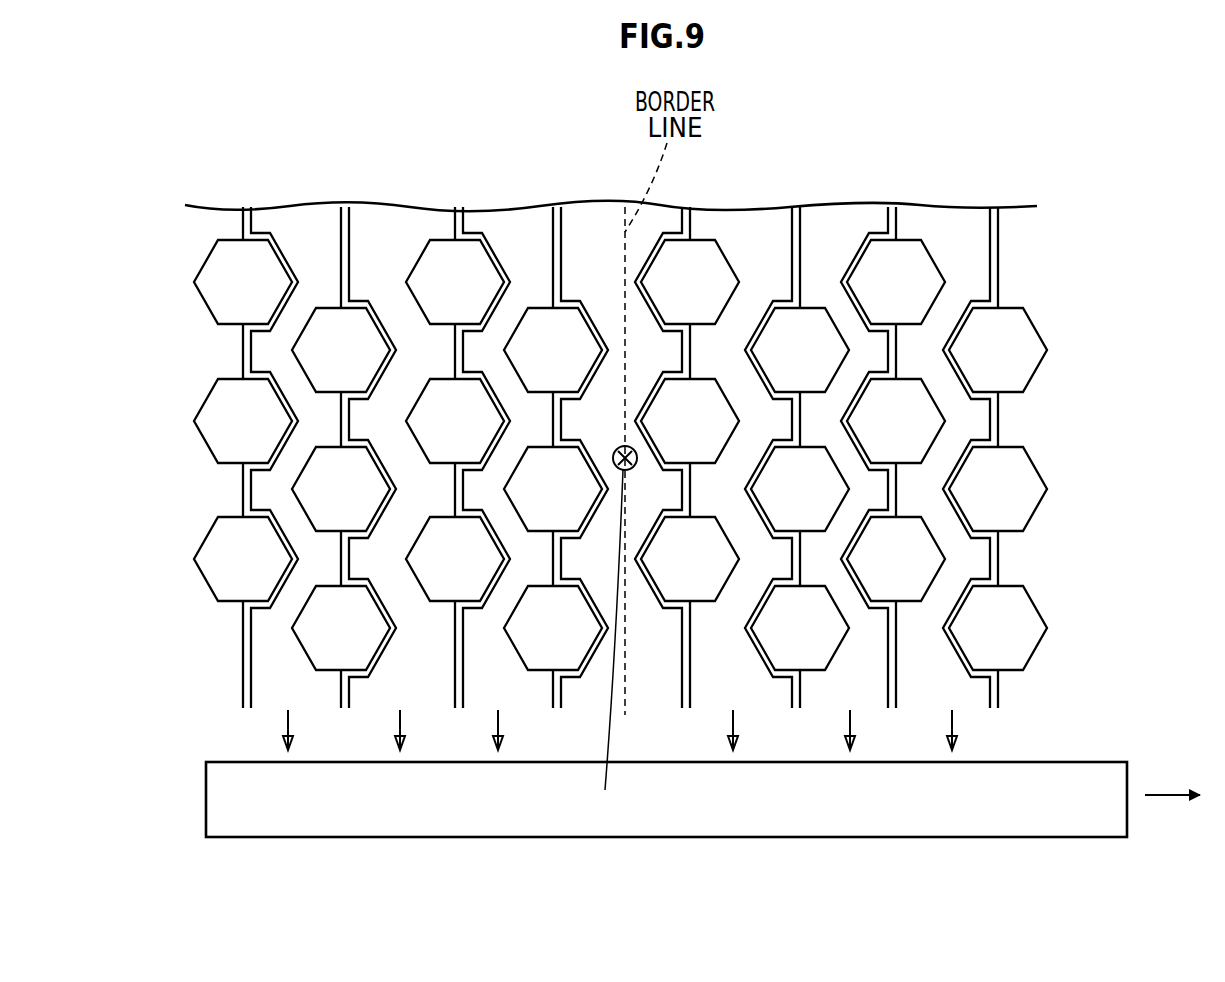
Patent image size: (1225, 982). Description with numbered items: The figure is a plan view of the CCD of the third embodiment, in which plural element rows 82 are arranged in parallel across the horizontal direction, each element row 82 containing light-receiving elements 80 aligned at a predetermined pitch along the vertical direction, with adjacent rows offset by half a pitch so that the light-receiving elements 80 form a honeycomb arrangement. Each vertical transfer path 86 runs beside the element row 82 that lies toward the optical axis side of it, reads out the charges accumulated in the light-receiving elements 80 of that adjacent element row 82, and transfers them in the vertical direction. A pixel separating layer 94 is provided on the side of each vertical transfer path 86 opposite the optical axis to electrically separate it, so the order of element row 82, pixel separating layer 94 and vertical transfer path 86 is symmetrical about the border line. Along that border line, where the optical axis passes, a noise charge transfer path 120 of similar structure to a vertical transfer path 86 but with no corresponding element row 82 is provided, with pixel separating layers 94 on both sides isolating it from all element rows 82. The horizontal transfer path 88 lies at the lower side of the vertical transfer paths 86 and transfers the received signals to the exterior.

The light-receiving element 80 is at (207, 276).
The element row 82 is at (248, 198).
The vertical transfer path 86 is at (620, 723).
The horizontal transfer path 88 is at (865, 818).
The pixel separating layer 94 is at (243, 208).
The noise charge transfer path 120 is at (603, 192).